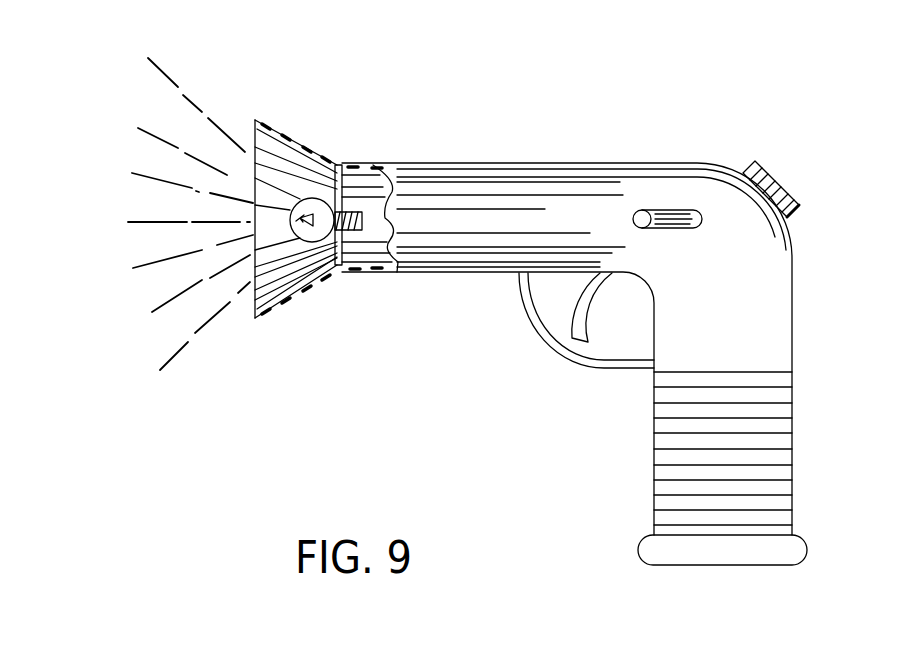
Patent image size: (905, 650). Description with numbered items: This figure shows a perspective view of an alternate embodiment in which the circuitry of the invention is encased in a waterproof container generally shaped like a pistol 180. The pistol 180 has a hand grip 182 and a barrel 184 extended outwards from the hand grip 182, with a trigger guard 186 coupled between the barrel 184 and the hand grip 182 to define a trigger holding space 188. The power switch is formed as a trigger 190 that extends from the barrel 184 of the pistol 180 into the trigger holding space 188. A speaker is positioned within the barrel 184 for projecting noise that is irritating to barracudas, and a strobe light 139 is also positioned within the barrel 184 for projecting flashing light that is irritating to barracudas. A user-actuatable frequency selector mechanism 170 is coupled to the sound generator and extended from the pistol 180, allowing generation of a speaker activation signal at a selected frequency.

The strobe light 139 is at (313, 206).
The user-actuatable frequency selector mechanism 170 is at (673, 222).
The pistol 180 is at (505, 163).
The hand grip 182 is at (772, 445).
The barrel 184 is at (296, 296).
The trigger guard 186 is at (592, 364).
The trigger holding space 188 is at (568, 303).
The trigger 190 is at (592, 322).